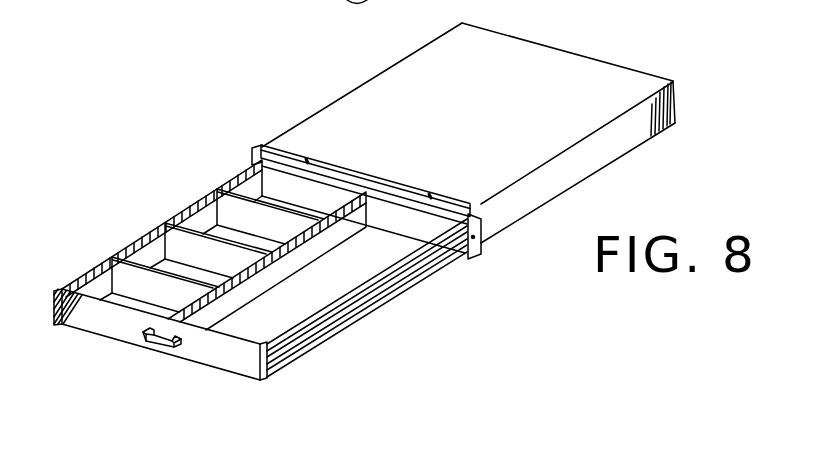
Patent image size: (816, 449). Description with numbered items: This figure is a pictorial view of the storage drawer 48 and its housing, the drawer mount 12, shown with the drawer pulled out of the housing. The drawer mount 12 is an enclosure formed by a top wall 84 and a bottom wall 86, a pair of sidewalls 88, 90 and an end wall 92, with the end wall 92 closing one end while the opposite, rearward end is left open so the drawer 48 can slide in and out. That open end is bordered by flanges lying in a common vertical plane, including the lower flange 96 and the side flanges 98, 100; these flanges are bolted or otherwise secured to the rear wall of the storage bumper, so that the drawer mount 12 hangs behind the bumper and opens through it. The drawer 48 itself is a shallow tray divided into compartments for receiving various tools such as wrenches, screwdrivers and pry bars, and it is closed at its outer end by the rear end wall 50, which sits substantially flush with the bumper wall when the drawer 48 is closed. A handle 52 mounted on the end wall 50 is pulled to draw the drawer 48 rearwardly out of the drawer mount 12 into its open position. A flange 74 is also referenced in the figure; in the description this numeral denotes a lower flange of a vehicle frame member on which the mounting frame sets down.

The drawer mount 12 is at (560, 63).
The storage drawer 48 is at (97, 356).
The rear end wall 50 is at (210, 354).
The handle 52 is at (158, 348).
The lower flange 74 is at (412, 192).
The top wall 84 is at (613, 93).
The bottom wall 86 is at (557, 187).
The sidewall 88 is at (353, 97).
The sidewall 90 is at (607, 160).
The end wall 92 is at (498, 34).
The lower flange 96 is at (447, 257).
The side flange 98 is at (250, 158).
The side flange 100 is at (480, 253).